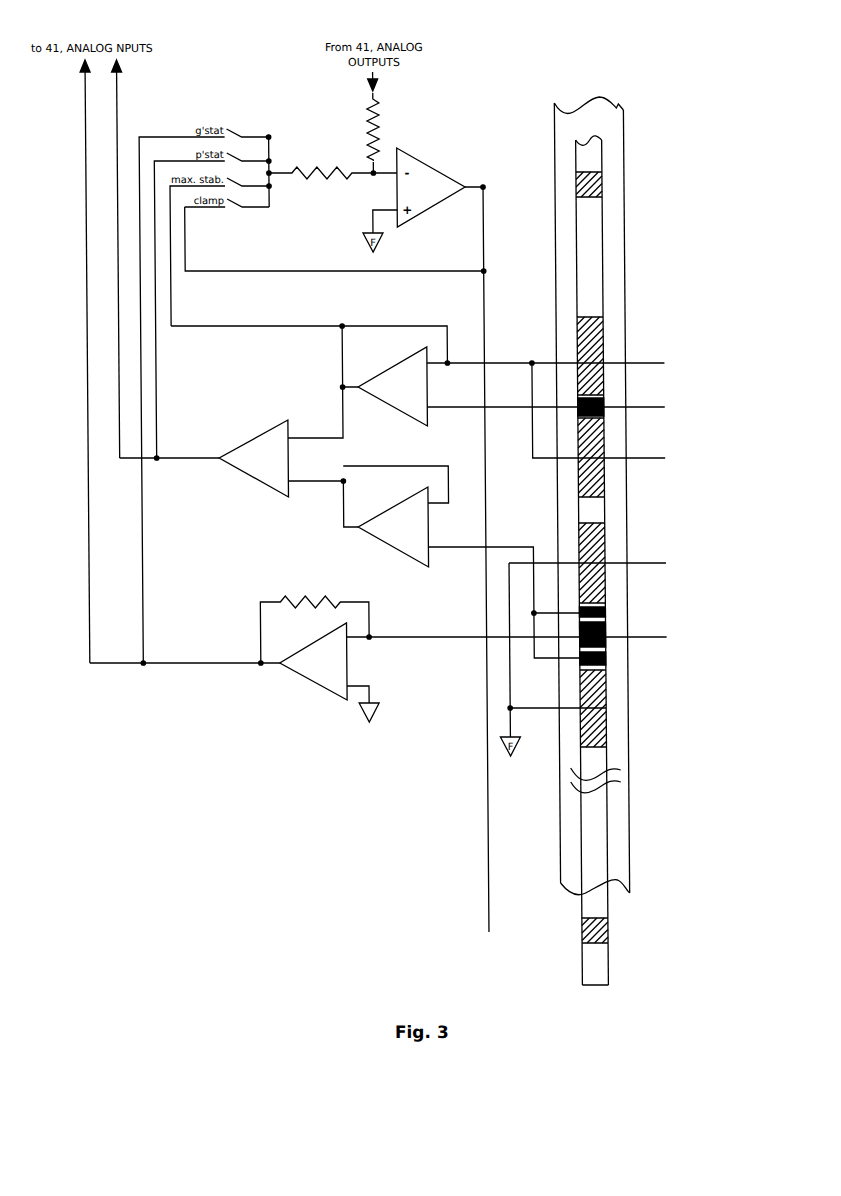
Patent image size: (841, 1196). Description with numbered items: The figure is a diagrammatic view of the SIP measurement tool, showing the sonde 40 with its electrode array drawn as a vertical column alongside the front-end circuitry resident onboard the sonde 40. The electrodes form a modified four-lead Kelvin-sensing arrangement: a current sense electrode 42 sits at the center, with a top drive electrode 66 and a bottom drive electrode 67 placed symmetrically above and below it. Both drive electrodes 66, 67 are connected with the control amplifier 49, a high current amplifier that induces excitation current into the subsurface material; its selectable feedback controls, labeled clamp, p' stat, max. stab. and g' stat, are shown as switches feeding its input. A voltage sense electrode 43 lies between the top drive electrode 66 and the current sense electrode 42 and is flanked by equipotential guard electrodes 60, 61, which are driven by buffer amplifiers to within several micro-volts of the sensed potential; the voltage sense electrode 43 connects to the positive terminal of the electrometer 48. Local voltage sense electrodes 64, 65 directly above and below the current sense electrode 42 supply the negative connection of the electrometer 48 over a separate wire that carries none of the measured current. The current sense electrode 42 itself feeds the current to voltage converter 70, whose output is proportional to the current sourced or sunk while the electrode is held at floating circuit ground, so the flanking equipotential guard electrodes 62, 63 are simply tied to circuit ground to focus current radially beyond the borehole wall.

The sonde 40 is at (588, 157).
The top drive electrode 66 is at (483, 187).
The equipotential guard electrode 60 is at (686, 356).
The voltage sense electrode 43 is at (687, 405).
The equipotential guard electrode 61 is at (687, 457).
The equipotential guard electrode 62 is at (688, 563).
The local voltage sense electrode 64 is at (602, 612).
The current sense electrode 42 is at (688, 637).
The local voltage sense electrode 65 is at (602, 657).
The equipotential guard electrode 63 is at (602, 710).
The bottom drive electrode 67 is at (483, 932).
The control amplifier 49 is at (323, 153).
The electrometer 48 is at (393, 491).
The current to voltage converter 70 is at (378, 659).